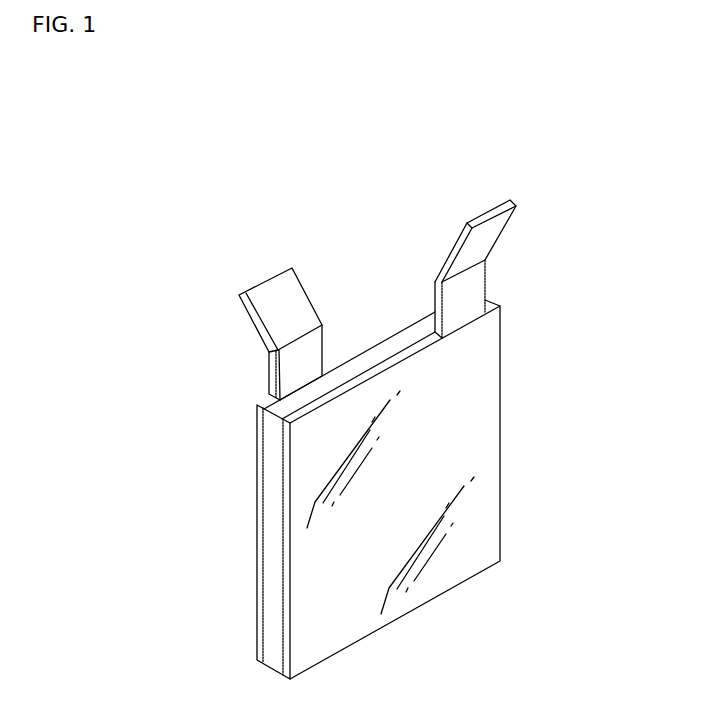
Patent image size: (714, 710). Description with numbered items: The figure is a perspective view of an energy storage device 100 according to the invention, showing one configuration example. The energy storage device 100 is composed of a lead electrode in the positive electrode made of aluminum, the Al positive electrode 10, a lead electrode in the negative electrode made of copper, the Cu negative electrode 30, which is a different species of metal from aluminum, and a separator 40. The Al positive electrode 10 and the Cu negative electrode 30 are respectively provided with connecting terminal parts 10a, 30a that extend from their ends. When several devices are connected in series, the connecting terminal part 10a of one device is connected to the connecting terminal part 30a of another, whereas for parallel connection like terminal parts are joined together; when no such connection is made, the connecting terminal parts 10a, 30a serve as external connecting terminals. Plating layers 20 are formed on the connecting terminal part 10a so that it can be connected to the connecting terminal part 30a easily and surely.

The energy storage device 100 is at (372, 241).
The Al positive electrode 10 is at (352, 356).
The connecting terminal part 10a is at (268, 281).
The plating layers 20 is at (240, 300).
The Cu negative electrode 30 is at (395, 334).
The connecting terminal part 30a is at (517, 207).
The separator 40 is at (272, 548).